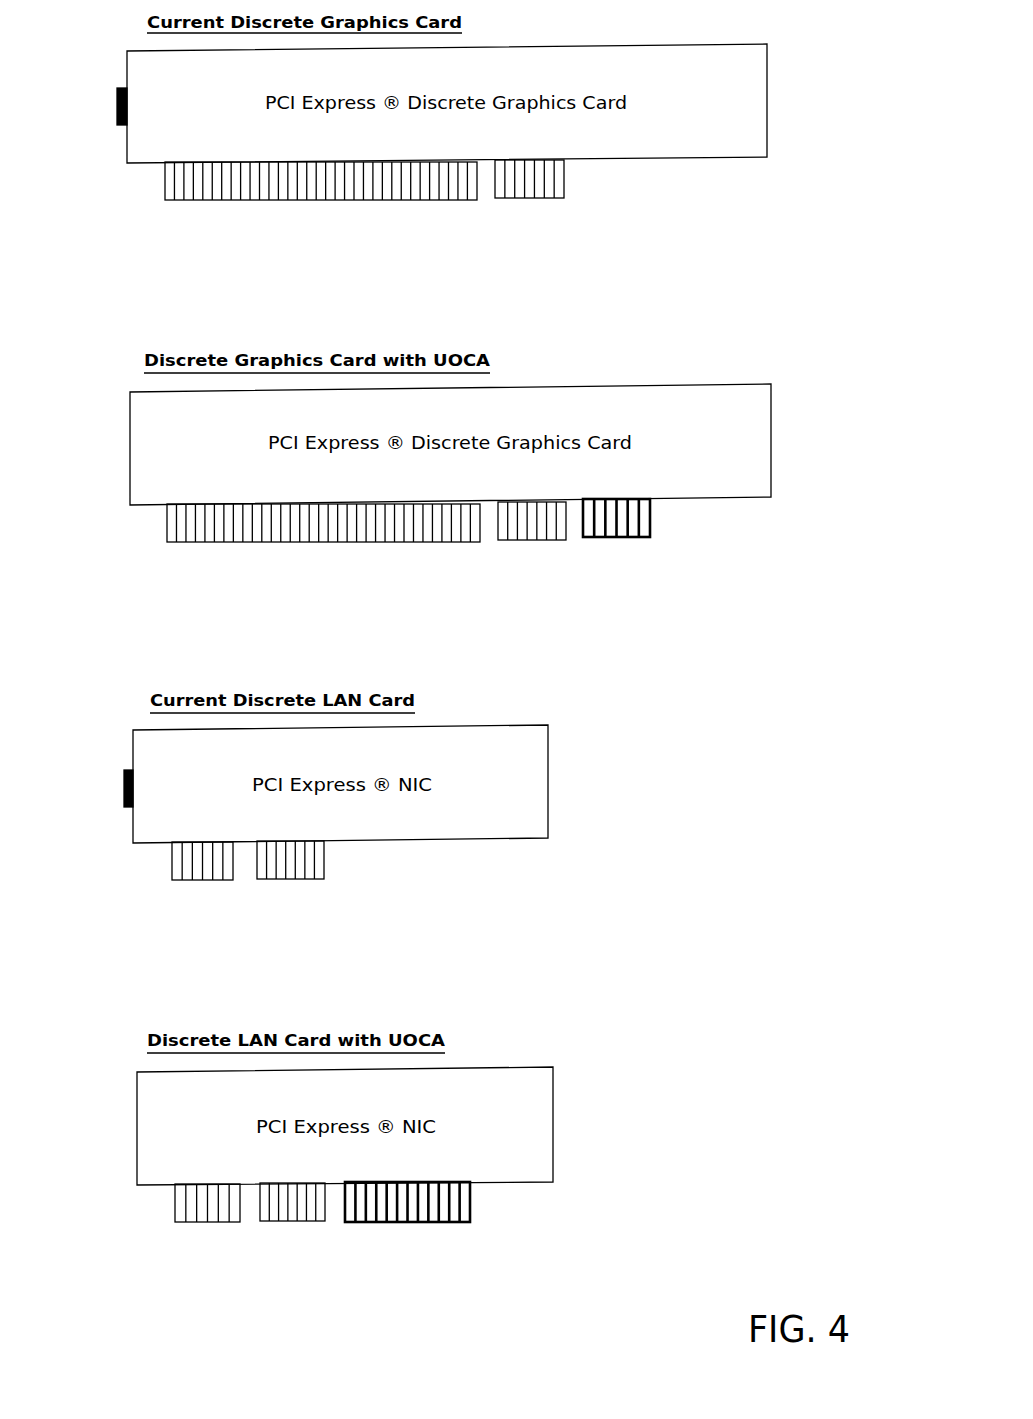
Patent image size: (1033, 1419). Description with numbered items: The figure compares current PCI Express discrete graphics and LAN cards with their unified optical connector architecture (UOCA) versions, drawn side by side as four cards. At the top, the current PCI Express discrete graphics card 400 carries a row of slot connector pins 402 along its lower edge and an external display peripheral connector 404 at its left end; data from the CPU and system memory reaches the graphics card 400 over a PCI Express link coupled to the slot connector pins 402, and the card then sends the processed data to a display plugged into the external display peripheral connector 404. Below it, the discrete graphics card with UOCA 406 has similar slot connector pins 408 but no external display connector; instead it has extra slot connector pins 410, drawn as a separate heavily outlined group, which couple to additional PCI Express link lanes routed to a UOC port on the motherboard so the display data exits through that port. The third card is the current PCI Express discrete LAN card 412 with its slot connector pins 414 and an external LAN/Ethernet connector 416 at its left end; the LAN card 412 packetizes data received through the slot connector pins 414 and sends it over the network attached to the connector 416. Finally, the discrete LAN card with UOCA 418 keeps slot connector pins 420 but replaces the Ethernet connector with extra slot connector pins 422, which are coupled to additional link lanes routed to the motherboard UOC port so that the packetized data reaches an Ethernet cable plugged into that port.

The PCI Express discrete graphics card 400 is at (767, 96).
The slot connector pins 402 is at (563, 215).
The external display peripheral connector 404 is at (117, 106).
The discrete graphics card with UOCA 406 is at (771, 440).
The slot connector pins 408 is at (566, 560).
The extra slot connector pins 410 is at (650, 554).
The PCI Express discrete LAN card 412 is at (548, 783).
The slot connector pins 414 is at (324, 900).
The external LAN/Ethernet connector 416 is at (124, 791).
The discrete LAN card with UOCA 418 is at (553, 1125).
The slot connector pins 420 is at (325, 1241).
The extra slot connector pins 422 is at (470, 1241).